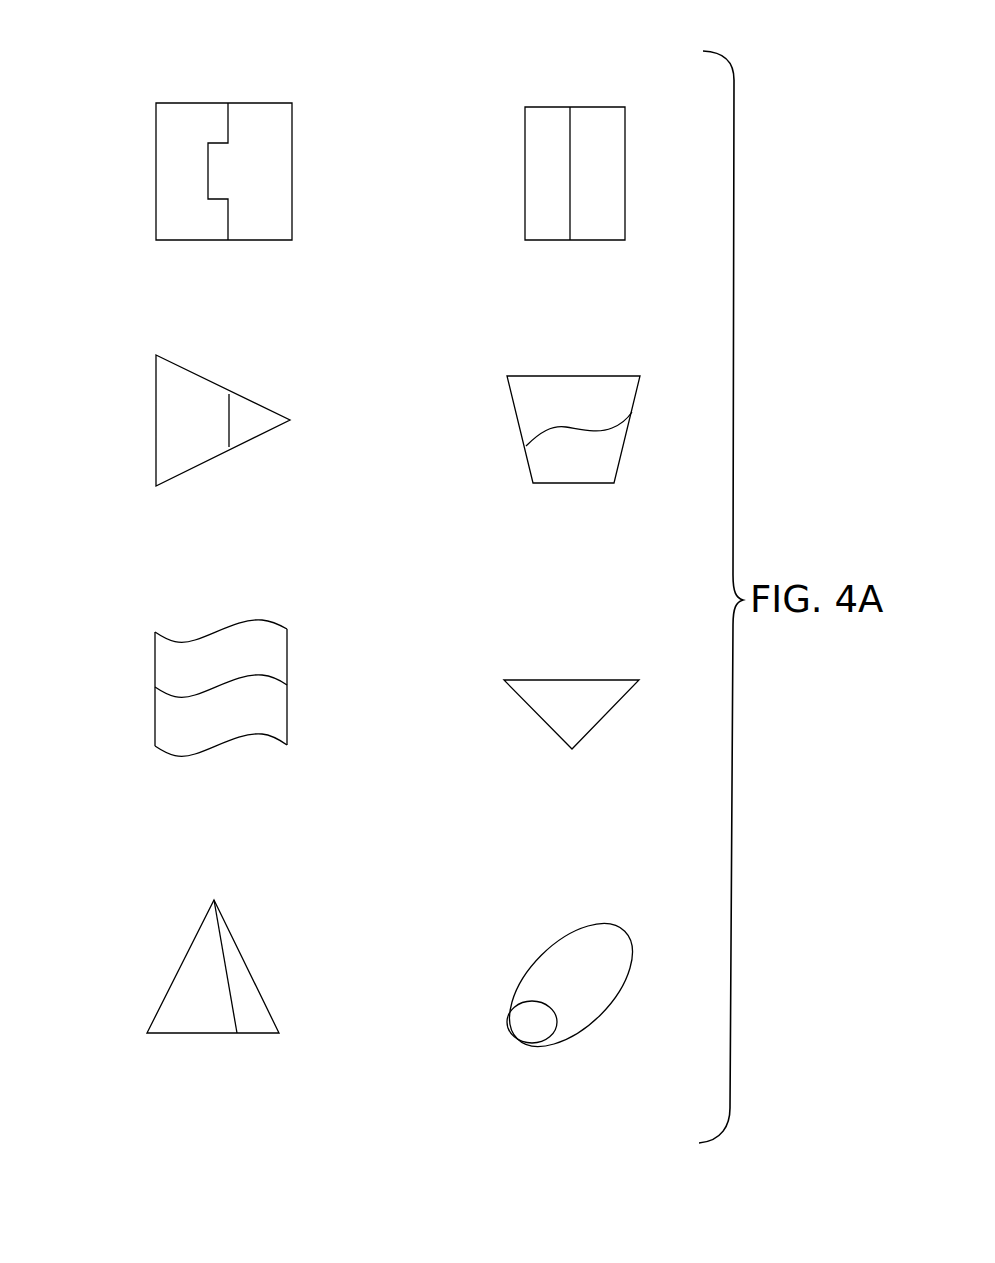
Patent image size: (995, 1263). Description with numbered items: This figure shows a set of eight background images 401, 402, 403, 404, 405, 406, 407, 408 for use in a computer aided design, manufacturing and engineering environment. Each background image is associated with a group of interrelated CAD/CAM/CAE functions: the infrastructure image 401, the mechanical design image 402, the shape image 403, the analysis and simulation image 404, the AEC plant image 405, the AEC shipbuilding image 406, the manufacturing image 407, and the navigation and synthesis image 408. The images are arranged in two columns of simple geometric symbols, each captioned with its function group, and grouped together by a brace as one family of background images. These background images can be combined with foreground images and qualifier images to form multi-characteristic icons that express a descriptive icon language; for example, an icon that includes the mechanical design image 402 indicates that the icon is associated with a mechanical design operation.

The background image 401 is at (155, 90).
The background mechanical design image 402 is at (144, 363).
The background image 403 is at (145, 653).
The background image 404 is at (172, 930).
The background image 405 is at (524, 92).
The background image 406 is at (488, 400).
The background image 407 is at (503, 658).
The background image 408 is at (510, 952).